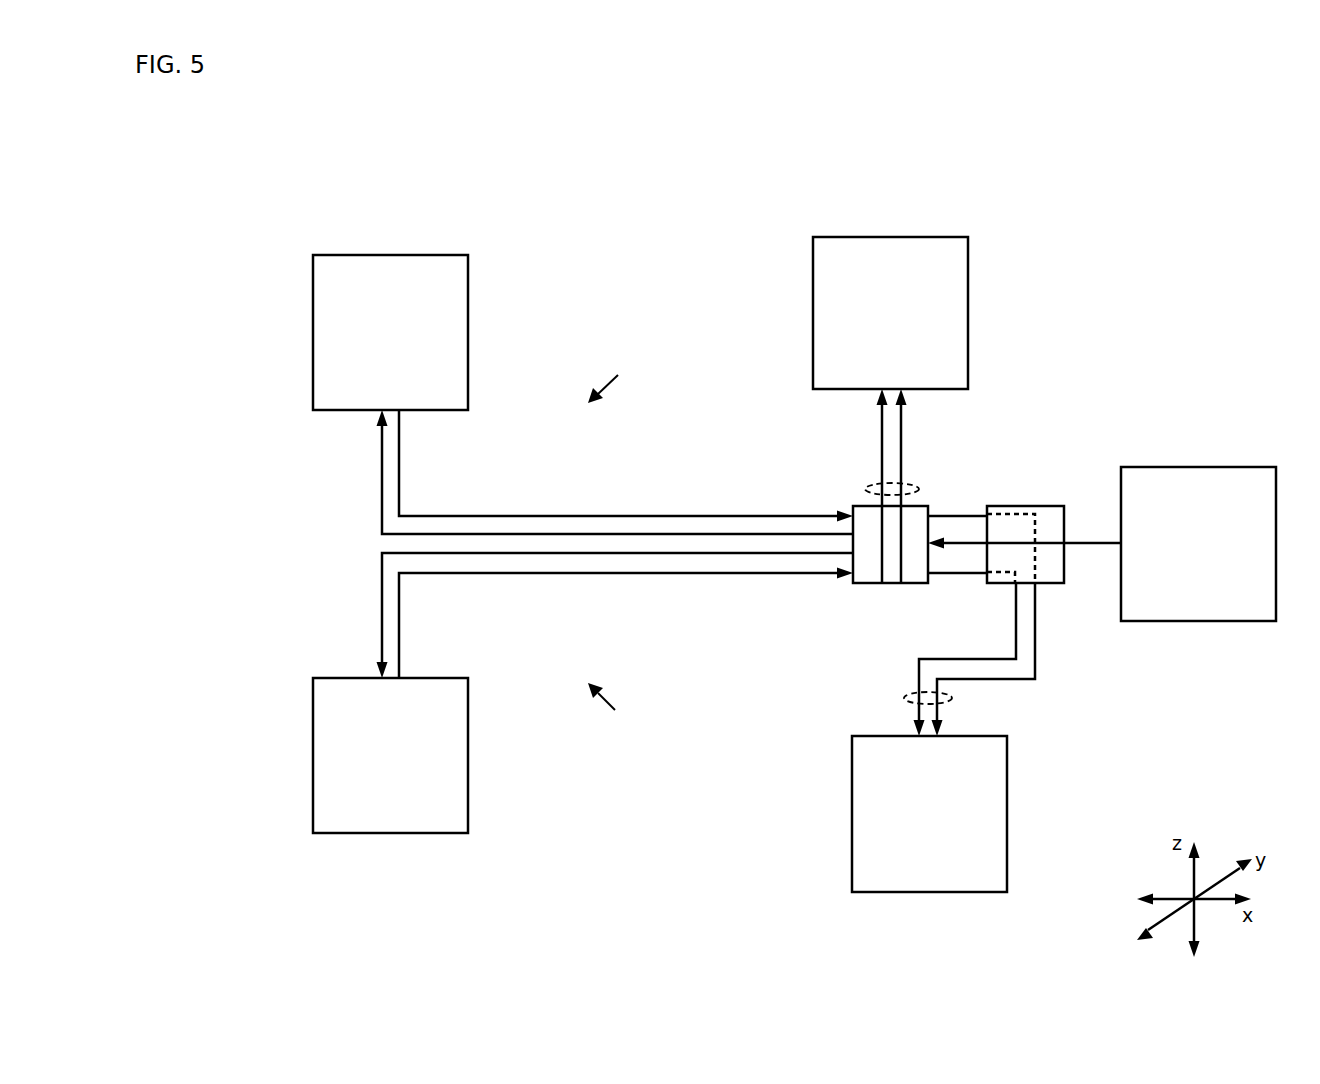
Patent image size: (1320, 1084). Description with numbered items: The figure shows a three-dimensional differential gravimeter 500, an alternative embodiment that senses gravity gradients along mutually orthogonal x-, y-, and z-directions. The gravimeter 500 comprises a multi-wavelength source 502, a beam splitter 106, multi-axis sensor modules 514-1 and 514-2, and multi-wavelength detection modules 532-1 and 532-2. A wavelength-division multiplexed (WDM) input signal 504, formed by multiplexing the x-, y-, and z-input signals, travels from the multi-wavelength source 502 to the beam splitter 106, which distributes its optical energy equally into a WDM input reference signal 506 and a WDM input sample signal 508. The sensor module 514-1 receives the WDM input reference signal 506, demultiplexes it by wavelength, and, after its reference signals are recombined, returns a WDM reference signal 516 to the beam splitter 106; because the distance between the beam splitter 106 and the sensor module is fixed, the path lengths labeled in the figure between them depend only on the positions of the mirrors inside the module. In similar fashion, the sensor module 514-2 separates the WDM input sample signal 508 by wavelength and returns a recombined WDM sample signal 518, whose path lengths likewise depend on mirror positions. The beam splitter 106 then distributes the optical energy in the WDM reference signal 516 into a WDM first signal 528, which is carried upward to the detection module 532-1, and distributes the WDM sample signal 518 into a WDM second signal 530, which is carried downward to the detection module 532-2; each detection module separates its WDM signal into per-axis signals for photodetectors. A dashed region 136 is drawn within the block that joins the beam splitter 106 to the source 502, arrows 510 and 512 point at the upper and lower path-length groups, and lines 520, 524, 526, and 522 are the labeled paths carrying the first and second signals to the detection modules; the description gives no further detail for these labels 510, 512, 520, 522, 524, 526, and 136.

The gravimeter 500 is at (376, 115).
The multi-wavelength source 502 is at (1199, 467).
The WDM input signal 504 is at (1072, 541).
The WDM input reference signal 506 is at (381, 508).
The WDM input sample signal 508 is at (381, 585).
The upper signal path group 510 is at (669, 267).
The lower signal path group 512 is at (675, 843).
The multi-axis sensor module 514-1 is at (313, 333).
The multi-axis sensor module 514-2 is at (313, 758).
The WDM reference signal 516 is at (696, 514).
The WDM sample signal 518 is at (698, 575).
The output line 520 is at (880, 449).
The output line 522 is at (1037, 645).
The output line 524 is at (903, 449).
The output line 526 is at (1014, 645).
The WDM first signal 528 is at (866, 489).
The WDM second signal 530 is at (904, 698).
The multi-wavelength detection module 532-1 is at (968, 316).
The multi-wavelength detection module 532-2 is at (1007, 818).
The switch element 136 is at (1026, 506).
The beam splitter 106 is at (890, 544).